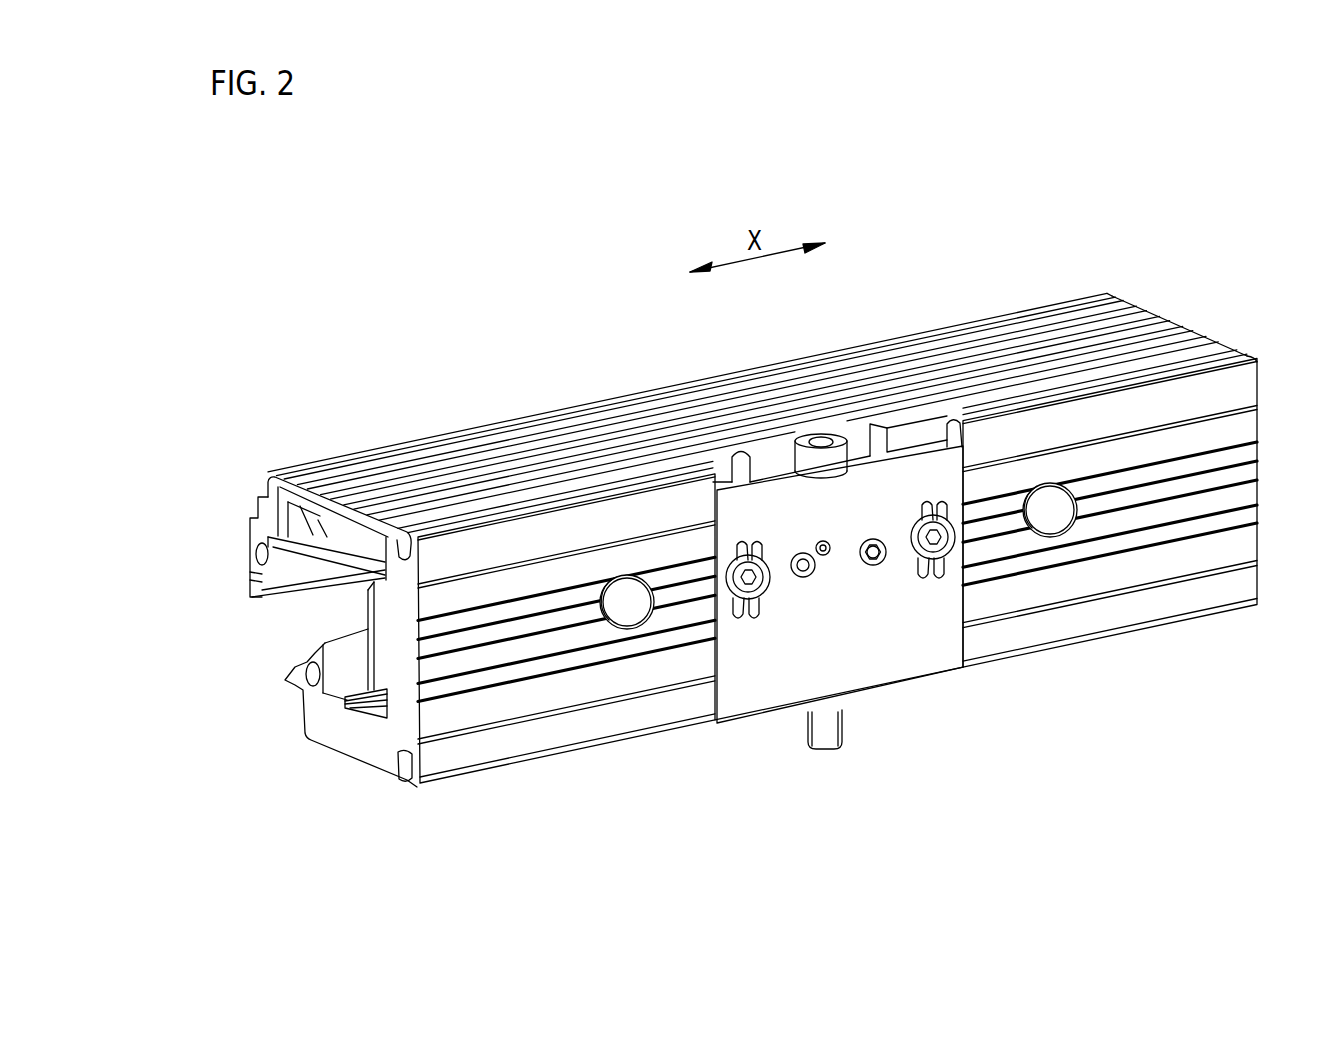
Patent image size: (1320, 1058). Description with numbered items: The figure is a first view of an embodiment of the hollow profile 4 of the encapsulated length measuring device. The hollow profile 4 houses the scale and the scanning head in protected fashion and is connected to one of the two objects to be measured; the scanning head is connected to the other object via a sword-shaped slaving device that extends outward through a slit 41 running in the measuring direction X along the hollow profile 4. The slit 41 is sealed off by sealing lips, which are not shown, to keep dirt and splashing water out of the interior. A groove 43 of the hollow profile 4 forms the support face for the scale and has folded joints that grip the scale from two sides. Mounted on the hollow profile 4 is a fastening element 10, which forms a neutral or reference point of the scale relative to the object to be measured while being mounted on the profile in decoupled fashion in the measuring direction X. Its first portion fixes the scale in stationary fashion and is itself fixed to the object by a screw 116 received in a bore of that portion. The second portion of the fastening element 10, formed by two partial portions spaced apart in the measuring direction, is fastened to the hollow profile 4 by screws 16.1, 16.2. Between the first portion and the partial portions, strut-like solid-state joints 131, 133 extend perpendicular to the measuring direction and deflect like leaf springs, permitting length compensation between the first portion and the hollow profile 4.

The fastening element 10 is at (869, 752).
The hollow profile 4 is at (272, 527).
The slit 41 is at (238, 629).
The groove 43 is at (370, 632).
The screw 16.1 is at (742, 570).
The screw 16.2 is at (934, 532).
The screw 116 is at (827, 466).
The solid-state joint 131 is at (745, 614).
The solid-state joint 133 is at (942, 578).